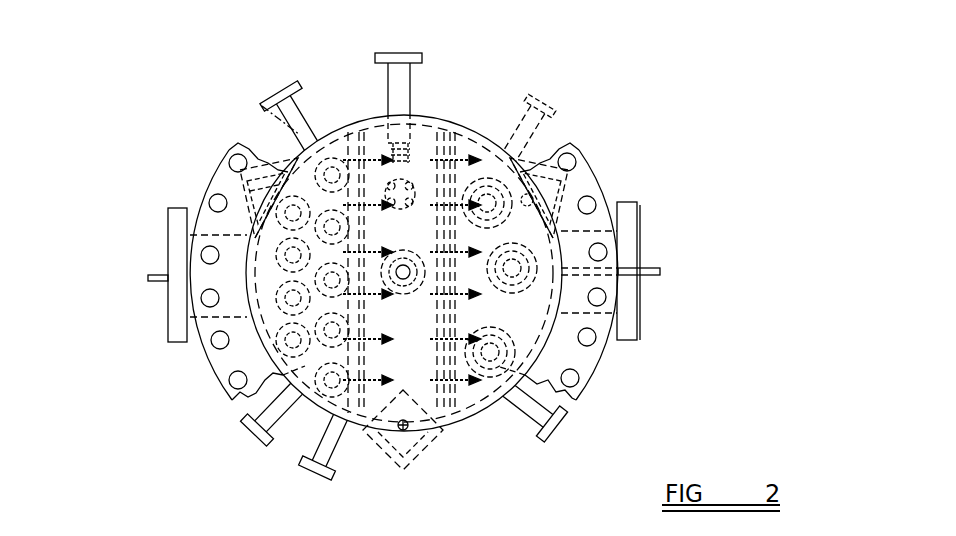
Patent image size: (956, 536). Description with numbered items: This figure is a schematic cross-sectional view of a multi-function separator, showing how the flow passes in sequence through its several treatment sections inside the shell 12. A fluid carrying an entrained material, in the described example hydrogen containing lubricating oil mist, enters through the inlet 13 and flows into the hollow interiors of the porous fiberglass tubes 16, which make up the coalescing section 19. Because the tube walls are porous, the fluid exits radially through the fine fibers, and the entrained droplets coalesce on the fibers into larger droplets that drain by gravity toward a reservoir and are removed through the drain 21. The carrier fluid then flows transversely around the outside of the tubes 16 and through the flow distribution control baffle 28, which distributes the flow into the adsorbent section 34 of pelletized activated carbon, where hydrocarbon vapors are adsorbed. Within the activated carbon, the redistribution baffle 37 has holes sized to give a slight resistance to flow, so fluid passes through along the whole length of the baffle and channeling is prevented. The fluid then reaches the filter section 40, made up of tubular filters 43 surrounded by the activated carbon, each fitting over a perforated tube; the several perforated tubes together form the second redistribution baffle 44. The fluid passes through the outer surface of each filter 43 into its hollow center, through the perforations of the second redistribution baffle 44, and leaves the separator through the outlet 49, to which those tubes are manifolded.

The shell 12 is at (443, 114).
The inlet 13 is at (167, 237).
The porous fiberglass tubes 16 is at (300, 405).
The coalescing section 19 is at (240, 413).
The drain 21 is at (392, 300).
The flow distribution control baffle 28 is at (337, 420).
The adsorbent section 34 is at (378, 150).
The redistribution baffle 37 is at (450, 427).
The filter section 40 is at (558, 208).
The tubular filters 43 is at (517, 352).
The second redistribution baffle 44 is at (502, 418).
The outlet 49 is at (655, 268).